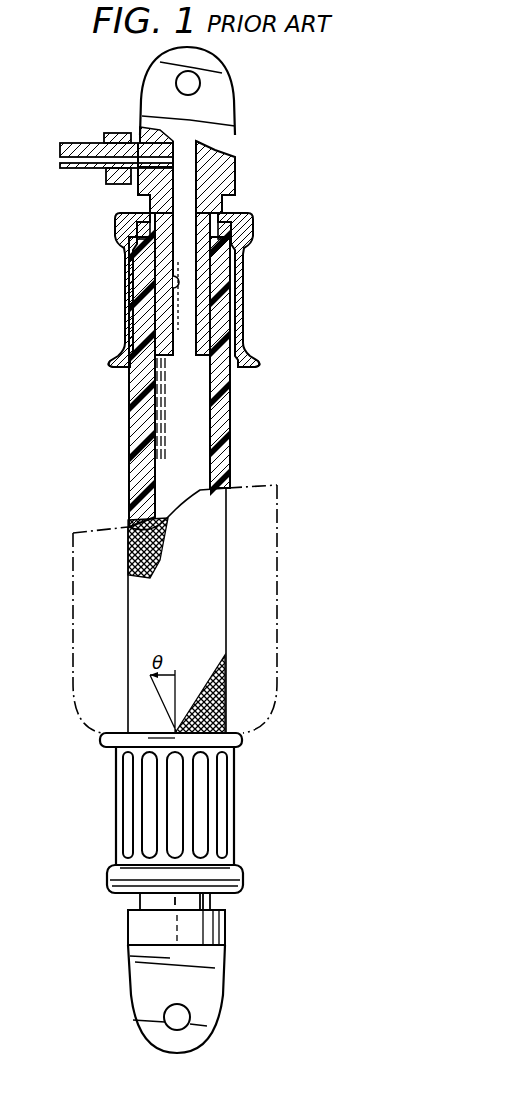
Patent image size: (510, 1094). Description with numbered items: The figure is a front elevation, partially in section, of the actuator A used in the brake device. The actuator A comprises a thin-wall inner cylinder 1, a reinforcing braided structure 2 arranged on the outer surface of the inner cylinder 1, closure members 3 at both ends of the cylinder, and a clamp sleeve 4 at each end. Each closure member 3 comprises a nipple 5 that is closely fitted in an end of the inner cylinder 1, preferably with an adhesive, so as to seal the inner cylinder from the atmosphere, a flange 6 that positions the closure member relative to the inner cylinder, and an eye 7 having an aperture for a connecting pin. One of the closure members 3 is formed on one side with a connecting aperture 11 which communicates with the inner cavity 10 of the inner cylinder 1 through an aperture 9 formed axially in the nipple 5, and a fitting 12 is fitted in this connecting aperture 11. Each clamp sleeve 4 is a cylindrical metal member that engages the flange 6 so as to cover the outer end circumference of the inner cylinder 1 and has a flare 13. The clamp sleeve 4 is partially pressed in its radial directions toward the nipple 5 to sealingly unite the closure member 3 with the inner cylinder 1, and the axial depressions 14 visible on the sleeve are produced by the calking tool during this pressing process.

The inner cylinder 1 is at (220, 460).
The reinforcing braided structure 2 is at (225, 672).
The closure member 3 is at (235, 173).
The clamp sleeve 4 is at (237, 327).
The nipple 5 is at (200, 298).
The flange 6 is at (222, 228).
The eye 7 is at (220, 107).
The aperture 9 is at (173, 292).
The inner cavity 10 is at (180, 423).
The connecting aperture 11 is at (116, 174).
The fitting 12 is at (75, 148).
The flare 13 is at (247, 360).
The axial depressions 14 is at (200, 812).
The actuator A is at (98, 448).